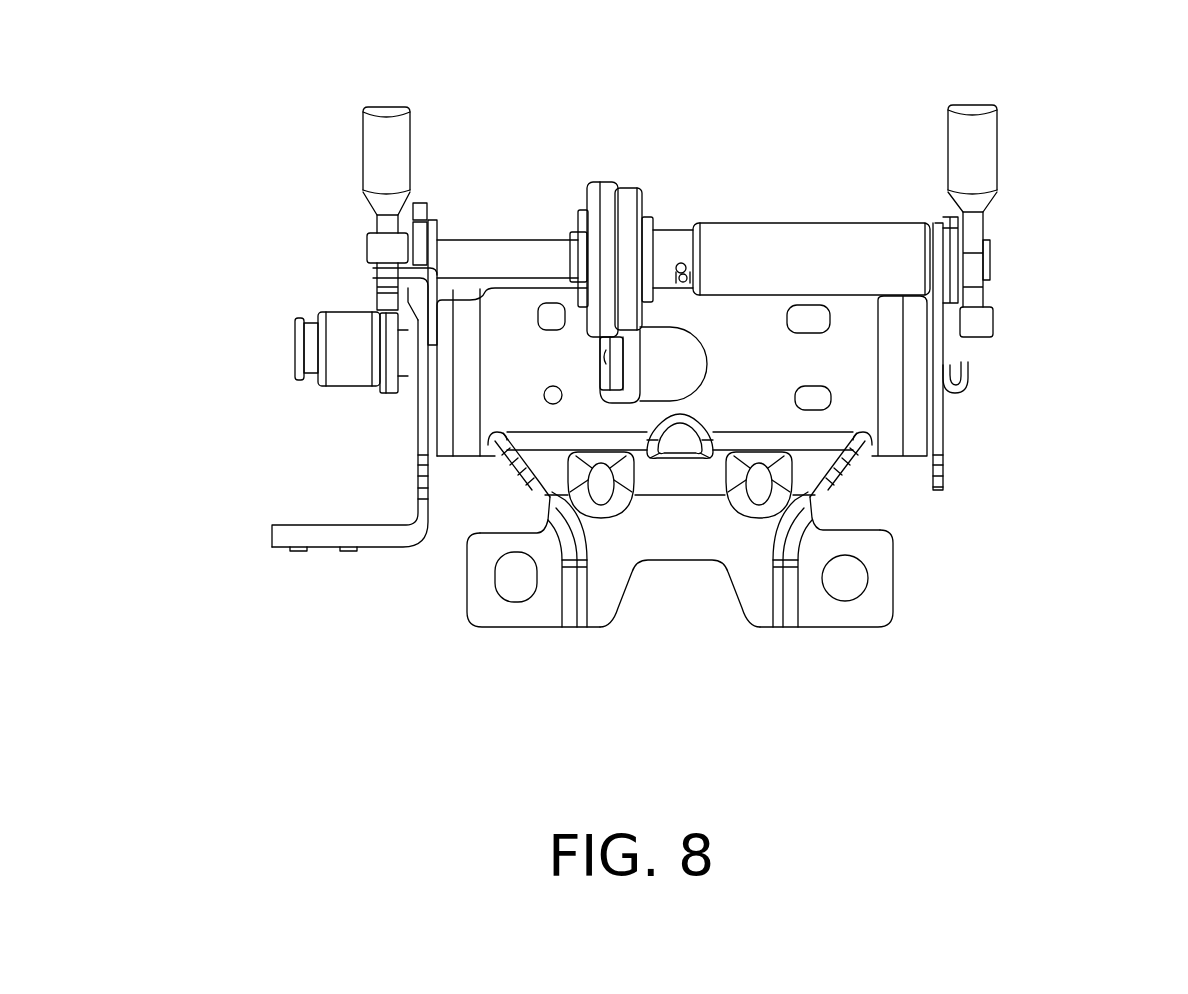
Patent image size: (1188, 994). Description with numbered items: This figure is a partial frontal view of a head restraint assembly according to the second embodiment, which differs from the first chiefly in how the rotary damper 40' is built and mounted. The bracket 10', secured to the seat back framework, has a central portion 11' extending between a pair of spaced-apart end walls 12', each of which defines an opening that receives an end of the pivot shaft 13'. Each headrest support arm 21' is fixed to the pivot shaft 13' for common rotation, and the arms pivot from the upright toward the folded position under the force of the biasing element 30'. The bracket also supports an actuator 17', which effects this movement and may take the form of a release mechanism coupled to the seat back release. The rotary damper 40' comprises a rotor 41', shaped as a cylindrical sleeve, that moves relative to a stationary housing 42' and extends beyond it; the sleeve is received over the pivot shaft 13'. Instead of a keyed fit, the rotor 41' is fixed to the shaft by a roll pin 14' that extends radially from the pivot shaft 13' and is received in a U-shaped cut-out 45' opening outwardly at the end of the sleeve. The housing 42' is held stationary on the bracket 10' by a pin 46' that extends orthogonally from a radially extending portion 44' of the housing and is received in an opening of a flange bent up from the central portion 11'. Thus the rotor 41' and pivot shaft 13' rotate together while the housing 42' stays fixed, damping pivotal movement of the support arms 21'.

The bracket 10' is at (654, 381).
The bracket central portion 11' is at (739, 470).
The end wall 12' is at (682, 377).
The pivot shaft 13' is at (507, 175).
The roll pin 14' is at (719, 320).
The actuator 17' is at (280, 352).
The headrest support arm 21' is at (682, 219).
The biasing element 30' is at (811, 205).
The rotary damper 40' is at (635, 360).
The rotor 41' is at (685, 229).
The stationary housing 42' is at (611, 231).
The radially extending portion 44' is at (651, 489).
The U-shaped cut-out 45' is at (730, 222).
The pin 46' is at (555, 363).